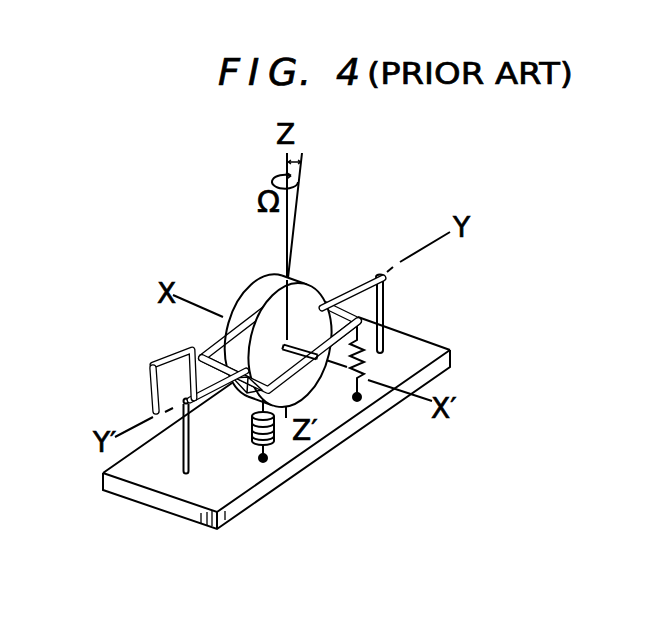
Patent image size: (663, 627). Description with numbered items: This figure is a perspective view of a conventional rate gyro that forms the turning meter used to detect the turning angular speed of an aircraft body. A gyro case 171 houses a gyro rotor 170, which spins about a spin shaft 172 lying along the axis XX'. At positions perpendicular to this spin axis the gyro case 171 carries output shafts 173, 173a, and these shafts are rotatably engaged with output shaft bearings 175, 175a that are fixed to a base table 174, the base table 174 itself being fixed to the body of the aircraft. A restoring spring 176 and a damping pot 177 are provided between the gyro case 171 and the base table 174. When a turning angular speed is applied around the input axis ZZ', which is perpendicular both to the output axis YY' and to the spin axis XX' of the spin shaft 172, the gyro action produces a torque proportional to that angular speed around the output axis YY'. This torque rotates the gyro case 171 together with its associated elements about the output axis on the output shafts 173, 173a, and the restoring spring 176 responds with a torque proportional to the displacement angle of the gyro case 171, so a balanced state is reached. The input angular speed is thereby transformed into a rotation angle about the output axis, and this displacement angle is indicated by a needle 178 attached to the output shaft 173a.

The gyro rotor 170 is at (298, 280).
The gyro case 171 is at (207, 343).
The spin shaft 172 is at (296, 348).
The output shaft 173 is at (358, 288).
The output shaft 173a is at (197, 393).
The base table 174 is at (450, 354).
The output shaft bearing 175 is at (385, 279).
The output shaft bearing 175a is at (190, 403).
The restoring spring 176 is at (358, 358).
The damping pot 177 is at (278, 437).
The needle 178 is at (170, 356).